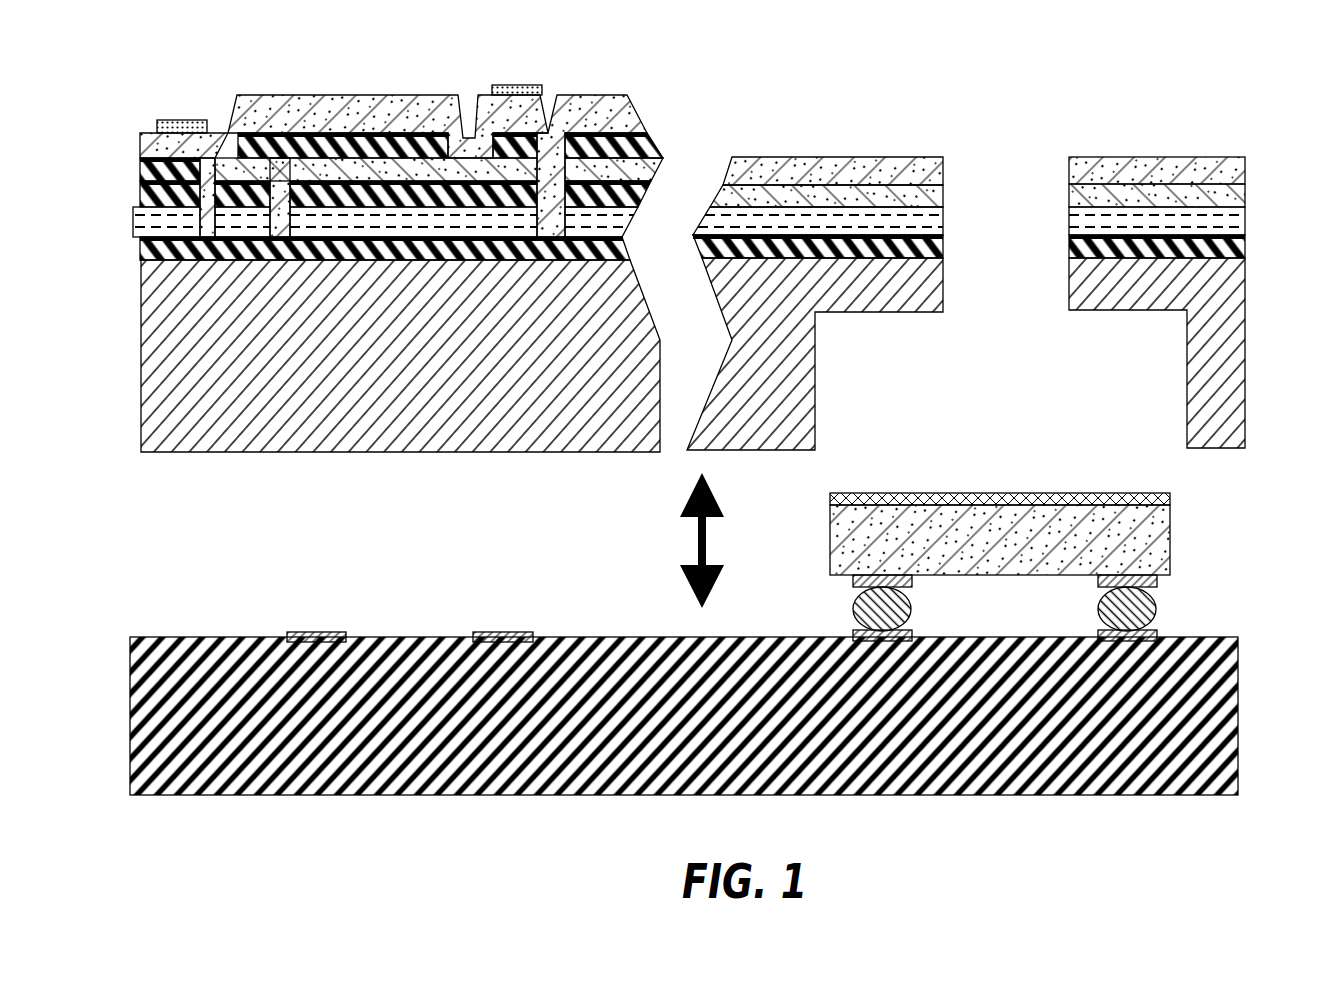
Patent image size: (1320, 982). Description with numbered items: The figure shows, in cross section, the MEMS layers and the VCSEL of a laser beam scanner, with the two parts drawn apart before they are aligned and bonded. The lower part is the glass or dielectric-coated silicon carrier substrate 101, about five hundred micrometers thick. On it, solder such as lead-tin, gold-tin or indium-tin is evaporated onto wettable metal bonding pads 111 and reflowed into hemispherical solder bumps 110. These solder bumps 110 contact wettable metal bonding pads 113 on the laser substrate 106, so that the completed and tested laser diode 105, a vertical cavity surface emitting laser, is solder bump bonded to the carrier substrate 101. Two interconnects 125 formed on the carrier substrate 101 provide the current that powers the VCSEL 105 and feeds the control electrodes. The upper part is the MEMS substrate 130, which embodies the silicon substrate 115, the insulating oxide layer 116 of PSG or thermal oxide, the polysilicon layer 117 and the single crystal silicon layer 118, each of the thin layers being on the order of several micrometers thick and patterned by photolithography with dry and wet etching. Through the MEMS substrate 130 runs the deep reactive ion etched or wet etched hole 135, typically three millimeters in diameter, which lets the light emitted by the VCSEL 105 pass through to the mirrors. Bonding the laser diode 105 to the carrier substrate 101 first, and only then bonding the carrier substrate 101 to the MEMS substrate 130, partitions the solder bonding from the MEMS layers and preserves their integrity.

The carrier substrate 101 is at (1240, 730).
The laser diode 105 is at (1033, 498).
The laser substrate 106 is at (1172, 535).
The solder bumps 110 is at (853, 605).
The bonding pads 111 is at (912, 630).
The bonding pads 113 is at (1160, 582).
The silicon substrate 115 is at (141, 314).
The insulating oxide layer 116 is at (650, 148).
The polysilicon layer 117 is at (1282, 126).
The single crystal silicon layer 118 is at (1247, 218).
The interconnects 125 is at (327, 632).
The MEMS substrate 130 is at (512, 58).
The hole 135 is at (1010, 152).